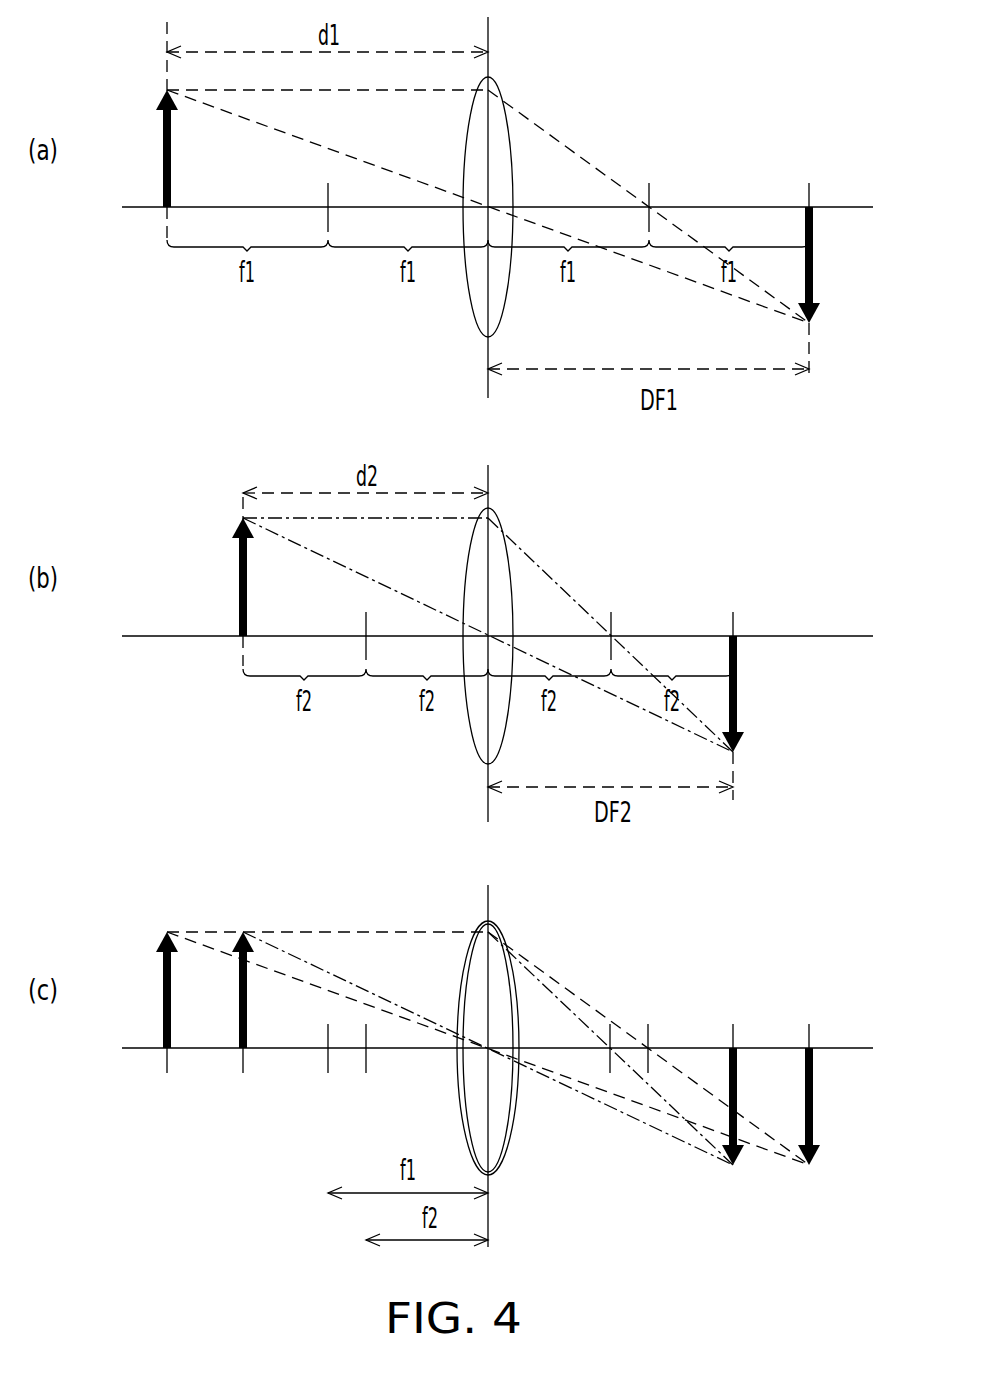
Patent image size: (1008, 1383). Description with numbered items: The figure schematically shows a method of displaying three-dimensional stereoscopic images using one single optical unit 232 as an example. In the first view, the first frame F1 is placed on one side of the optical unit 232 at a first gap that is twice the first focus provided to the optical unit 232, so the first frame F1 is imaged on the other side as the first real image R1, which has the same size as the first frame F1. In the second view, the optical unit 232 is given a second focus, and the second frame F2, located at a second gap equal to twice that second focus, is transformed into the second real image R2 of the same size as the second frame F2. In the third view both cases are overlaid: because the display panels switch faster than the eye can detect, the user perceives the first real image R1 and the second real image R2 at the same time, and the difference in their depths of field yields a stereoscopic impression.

The optical unit 232 is at (468, 295).
The first frame F1 is at (162, 176).
The second frame F2 is at (238, 604).
The first real image R1 is at (813, 220).
The second real image R2 is at (737, 650).